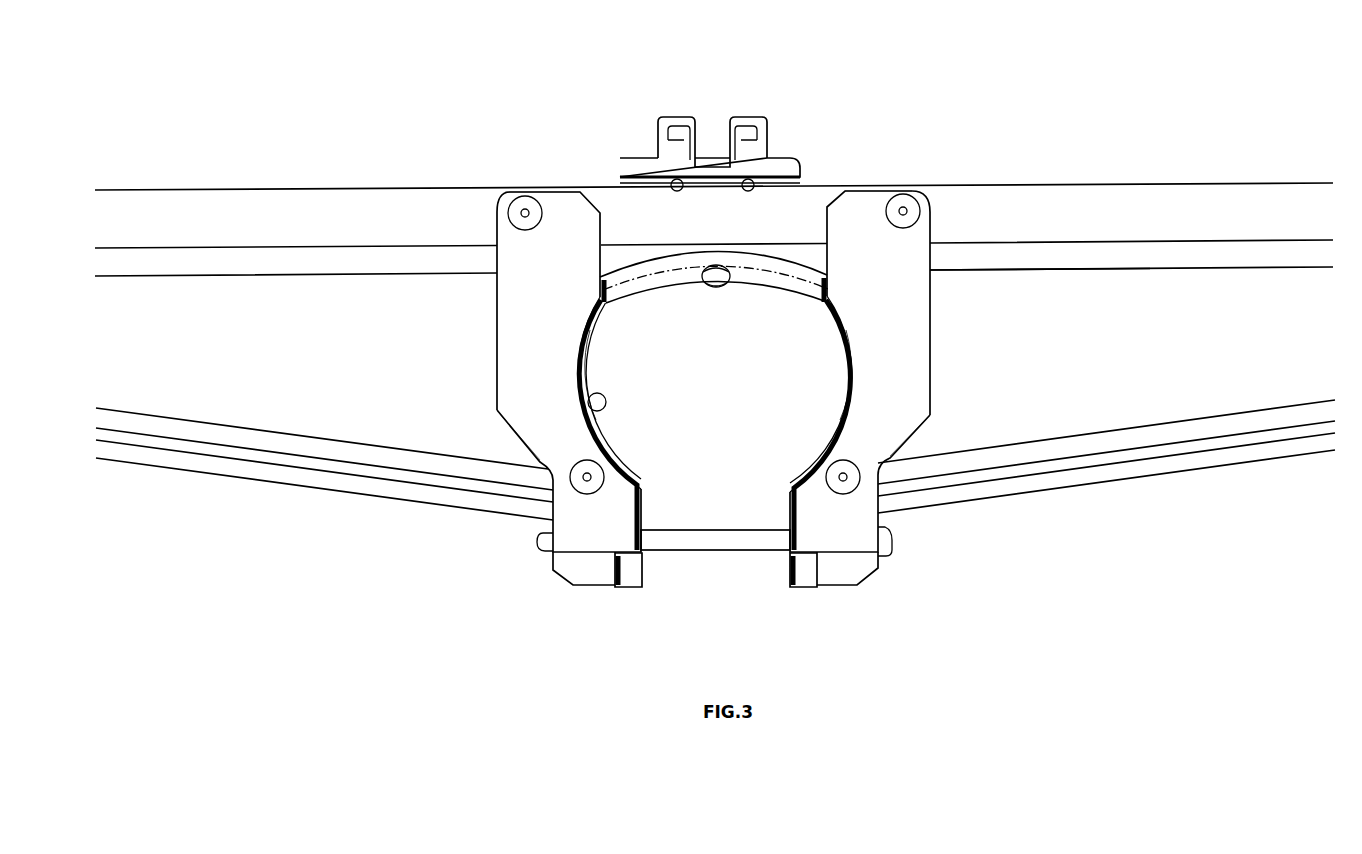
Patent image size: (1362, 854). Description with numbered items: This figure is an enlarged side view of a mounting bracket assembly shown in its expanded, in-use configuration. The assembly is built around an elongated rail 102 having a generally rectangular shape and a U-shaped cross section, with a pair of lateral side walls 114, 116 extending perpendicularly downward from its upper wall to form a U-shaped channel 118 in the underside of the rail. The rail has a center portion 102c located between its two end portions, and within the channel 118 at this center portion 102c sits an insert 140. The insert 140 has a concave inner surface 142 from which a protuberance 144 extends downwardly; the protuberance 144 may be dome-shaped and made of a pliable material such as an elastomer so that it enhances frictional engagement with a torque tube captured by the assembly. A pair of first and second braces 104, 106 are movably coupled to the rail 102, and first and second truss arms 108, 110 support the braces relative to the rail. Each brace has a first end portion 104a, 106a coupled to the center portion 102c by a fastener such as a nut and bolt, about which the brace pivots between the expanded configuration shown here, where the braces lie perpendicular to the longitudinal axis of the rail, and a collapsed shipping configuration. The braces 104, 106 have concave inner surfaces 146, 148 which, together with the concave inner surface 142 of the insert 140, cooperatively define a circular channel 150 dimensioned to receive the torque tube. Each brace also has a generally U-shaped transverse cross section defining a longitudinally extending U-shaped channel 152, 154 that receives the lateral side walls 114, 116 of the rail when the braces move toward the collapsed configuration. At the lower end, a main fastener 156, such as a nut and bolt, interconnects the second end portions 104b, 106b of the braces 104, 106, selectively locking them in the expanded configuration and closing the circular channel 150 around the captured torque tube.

The elongated rail 102 is at (370, 176).
The center portion of the rail 102c is at (620, 203).
The first brace 104 is at (526, 390).
The first end portion of the first brace 104a is at (557, 210).
The second end portion of the first brace 104b is at (590, 540).
The second brace 106 is at (903, 357).
The first end portion of the second brace 106a is at (923, 227).
The second end portion of the second brace 106b is at (878, 528).
The first truss arm 108 is at (352, 480).
The second truss arm 110 is at (1185, 460).
The first lateral side wall 114 is at (1265, 224).
The second lateral side wall 116 is at (1312, 265).
The U-shaped channel 118 is at (1098, 272).
The insert 140 is at (718, 175).
The concave inner surface of the insert 142 is at (663, 282).
The protuberance 144 is at (727, 266).
The concave inner surface of the first brace 146 is at (855, 352).
The concave inner surface of the second brace 148 is at (607, 393).
The circular channel 150 is at (752, 448).
The U-shaped channel of the first brace 152 is at (497, 440).
The U-shaped channel of the second brace 154 is at (932, 443).
The main fastener 156 is at (707, 540).